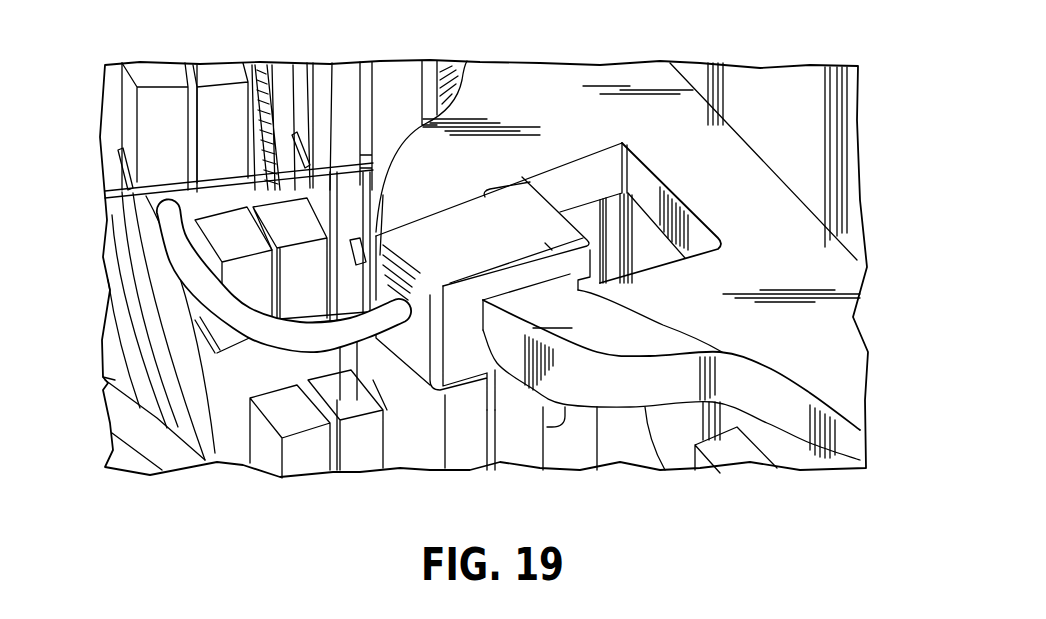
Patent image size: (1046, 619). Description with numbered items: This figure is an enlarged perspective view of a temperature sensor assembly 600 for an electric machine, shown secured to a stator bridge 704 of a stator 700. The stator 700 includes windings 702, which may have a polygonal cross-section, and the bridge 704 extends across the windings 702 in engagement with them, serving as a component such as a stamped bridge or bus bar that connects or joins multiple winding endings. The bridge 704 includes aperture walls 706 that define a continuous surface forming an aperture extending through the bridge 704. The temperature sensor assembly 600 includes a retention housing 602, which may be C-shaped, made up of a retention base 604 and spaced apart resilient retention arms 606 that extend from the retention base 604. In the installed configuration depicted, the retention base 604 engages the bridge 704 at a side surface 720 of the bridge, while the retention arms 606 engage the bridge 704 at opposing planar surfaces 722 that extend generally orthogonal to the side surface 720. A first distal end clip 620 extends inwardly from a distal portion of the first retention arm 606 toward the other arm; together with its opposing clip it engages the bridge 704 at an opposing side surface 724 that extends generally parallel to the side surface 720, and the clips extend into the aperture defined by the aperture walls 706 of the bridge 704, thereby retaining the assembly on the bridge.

The temperature sensor assembly 600 is at (276, 180).
The retention housing 602 is at (352, 253).
The retention base 604 is at (460, 327).
The retention arms 606 is at (497, 225).
The first distal end clip 620 is at (545, 243).
The stator 700 is at (796, 140).
The windings 702 is at (230, 235).
The stator bridge 704 is at (683, 143).
The aperture walls 706 is at (582, 178).
The side surface 720 is at (490, 330).
The opposing planar surfaces 722 is at (533, 497).
The opposing side surface 724 is at (655, 322).